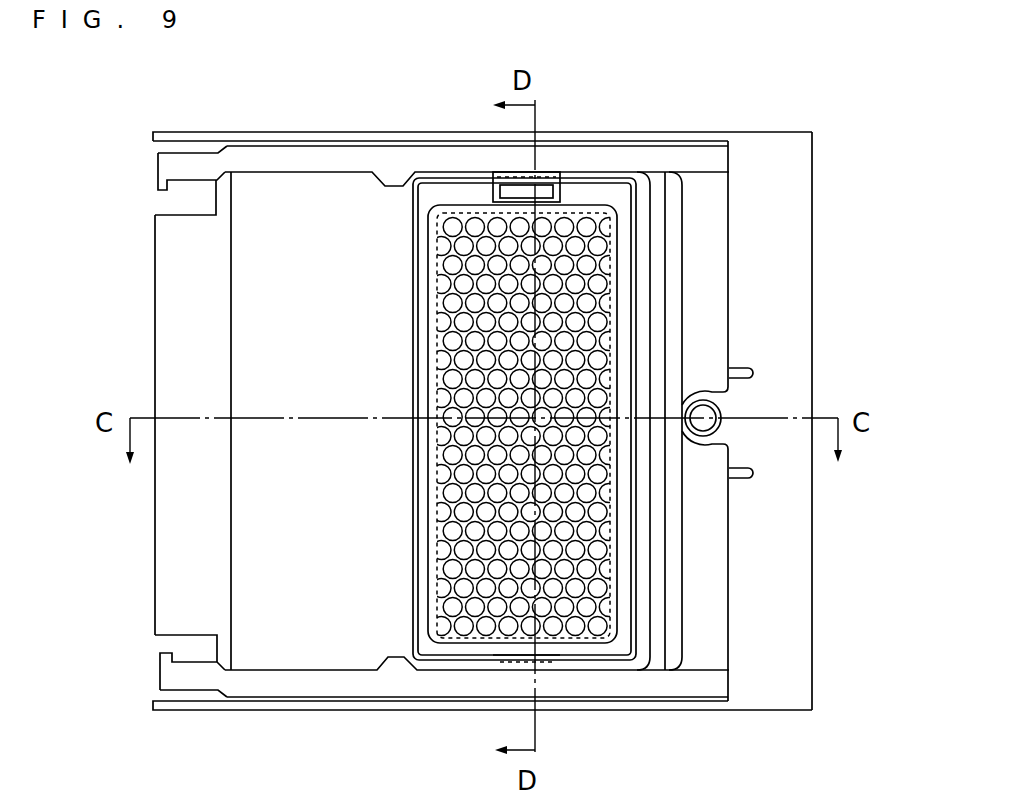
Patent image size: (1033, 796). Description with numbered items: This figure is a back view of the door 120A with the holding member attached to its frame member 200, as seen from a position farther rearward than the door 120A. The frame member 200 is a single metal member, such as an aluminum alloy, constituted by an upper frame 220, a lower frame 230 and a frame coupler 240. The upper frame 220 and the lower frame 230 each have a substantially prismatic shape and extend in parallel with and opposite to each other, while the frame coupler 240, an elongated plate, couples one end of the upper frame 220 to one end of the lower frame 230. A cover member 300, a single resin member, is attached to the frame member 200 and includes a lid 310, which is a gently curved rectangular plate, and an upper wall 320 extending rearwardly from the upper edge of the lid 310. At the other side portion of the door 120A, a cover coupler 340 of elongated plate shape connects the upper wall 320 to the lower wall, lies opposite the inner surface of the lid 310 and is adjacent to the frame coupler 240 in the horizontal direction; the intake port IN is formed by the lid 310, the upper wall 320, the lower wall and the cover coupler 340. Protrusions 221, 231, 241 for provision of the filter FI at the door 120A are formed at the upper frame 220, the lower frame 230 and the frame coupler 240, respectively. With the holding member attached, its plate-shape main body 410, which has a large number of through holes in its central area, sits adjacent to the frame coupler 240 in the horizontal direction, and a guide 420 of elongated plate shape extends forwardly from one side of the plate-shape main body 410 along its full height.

The door 120A is at (937, 78).
The frame member 200 is at (712, 160).
The upper frame 220 is at (254, 160).
The protrusion 221 is at (450, 176).
The lower frame 230 is at (258, 685).
The protrusion 231 is at (470, 660).
The frame coupler 240 is at (713, 505).
The protrusion 241 is at (637, 305).
The cover member 300 is at (813, 295).
The lid 310 is at (373, 398).
The upper wall 320 is at (643, 130).
The cover coupler 340 is at (803, 613).
The plate-shape main body 410 is at (618, 648).
The guide 420 is at (418, 492).
The filter FI is at (435, 262).
The intake port IN is at (828, 360).